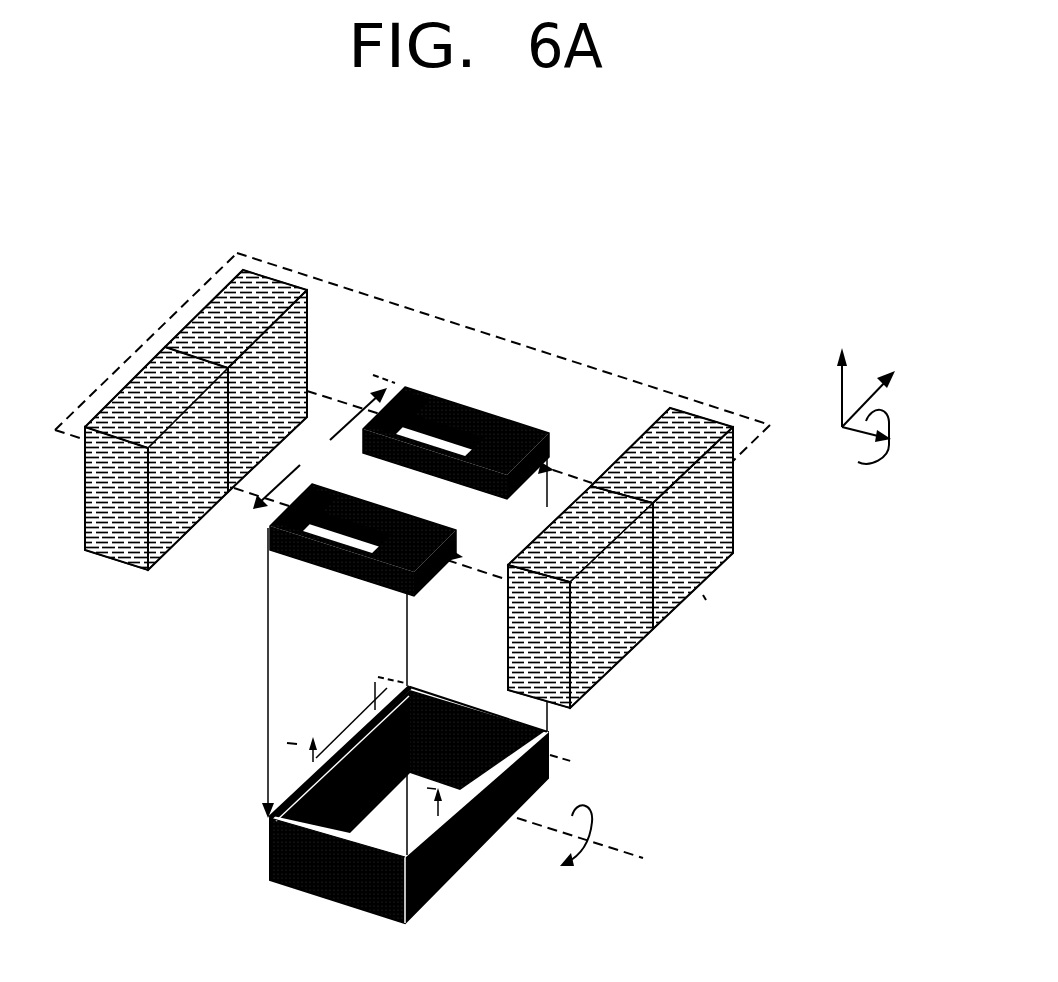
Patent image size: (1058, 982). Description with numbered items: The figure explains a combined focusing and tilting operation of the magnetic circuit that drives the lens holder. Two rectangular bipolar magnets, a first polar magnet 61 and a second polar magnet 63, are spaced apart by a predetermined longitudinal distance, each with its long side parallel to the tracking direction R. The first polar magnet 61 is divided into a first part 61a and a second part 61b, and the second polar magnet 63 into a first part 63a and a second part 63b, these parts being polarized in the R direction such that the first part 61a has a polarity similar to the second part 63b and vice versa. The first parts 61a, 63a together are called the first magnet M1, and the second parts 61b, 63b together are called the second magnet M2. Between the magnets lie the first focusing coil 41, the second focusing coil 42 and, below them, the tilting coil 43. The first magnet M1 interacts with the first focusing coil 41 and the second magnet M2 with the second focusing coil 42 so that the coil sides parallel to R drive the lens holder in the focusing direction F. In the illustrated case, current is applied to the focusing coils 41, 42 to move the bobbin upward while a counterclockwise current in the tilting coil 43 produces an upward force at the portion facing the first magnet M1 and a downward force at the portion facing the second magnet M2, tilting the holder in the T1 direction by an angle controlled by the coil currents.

The first focusing coil 41 is at (462, 404).
The second focusing coil 42 is at (333, 567).
The tilting coil 43 is at (298, 892).
The first polar magnet 61 is at (640, 588).
The first part of the first polar magnet 61a is at (677, 607).
The second part of the first polar magnet 61b is at (603, 657).
The second polar magnet 63 is at (169, 401).
The first part of the second polar magnet 63a is at (193, 320).
The second part of the second polar magnet 63b is at (137, 380).
The first magnet M1 is at (737, 481).
The second magnet M2 is at (703, 595).
The tilting direction T1 is at (890, 421).
The focusing direction F is at (838, 370).
The tracking direction R is at (879, 389).